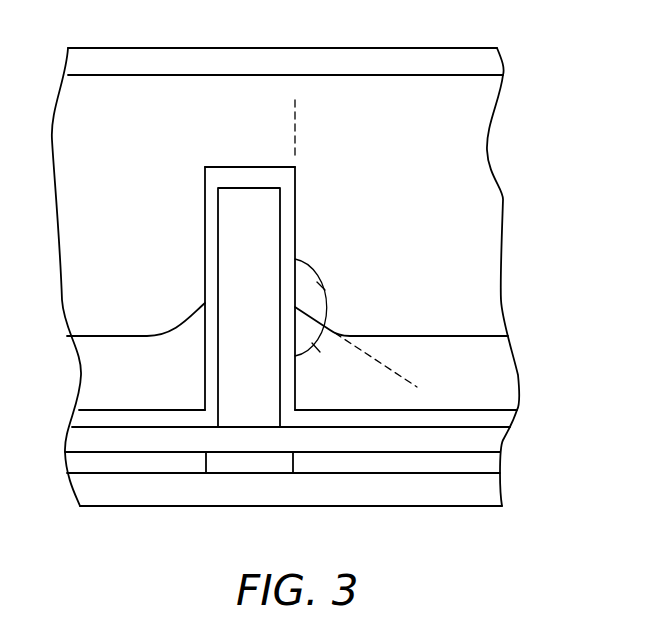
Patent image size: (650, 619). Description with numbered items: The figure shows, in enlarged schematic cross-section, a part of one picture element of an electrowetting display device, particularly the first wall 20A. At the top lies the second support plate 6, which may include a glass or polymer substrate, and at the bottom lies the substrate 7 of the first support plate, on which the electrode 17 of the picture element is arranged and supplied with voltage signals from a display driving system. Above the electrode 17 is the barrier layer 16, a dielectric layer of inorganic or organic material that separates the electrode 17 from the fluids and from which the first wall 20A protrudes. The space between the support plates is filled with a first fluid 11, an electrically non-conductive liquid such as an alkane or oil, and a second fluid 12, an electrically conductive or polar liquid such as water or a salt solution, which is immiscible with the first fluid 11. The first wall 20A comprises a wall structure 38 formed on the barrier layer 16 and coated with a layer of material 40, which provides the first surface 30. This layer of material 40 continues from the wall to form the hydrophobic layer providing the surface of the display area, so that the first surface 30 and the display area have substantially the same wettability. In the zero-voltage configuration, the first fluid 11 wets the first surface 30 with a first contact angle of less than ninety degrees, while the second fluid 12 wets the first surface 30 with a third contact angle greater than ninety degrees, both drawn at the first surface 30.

The second support plate 6 is at (452, 58).
The substrate 7 is at (117, 495).
The first fluid 11 is at (92, 373).
The second fluid 12 is at (478, 152).
The barrier layer 16 is at (330, 440).
The electrode 17 is at (175, 463).
The first wall 20A is at (205, 183).
The first surface 30 is at (295, 200).
The wall structure 38 is at (232, 262).
The layer of material 40 is at (250, 178).